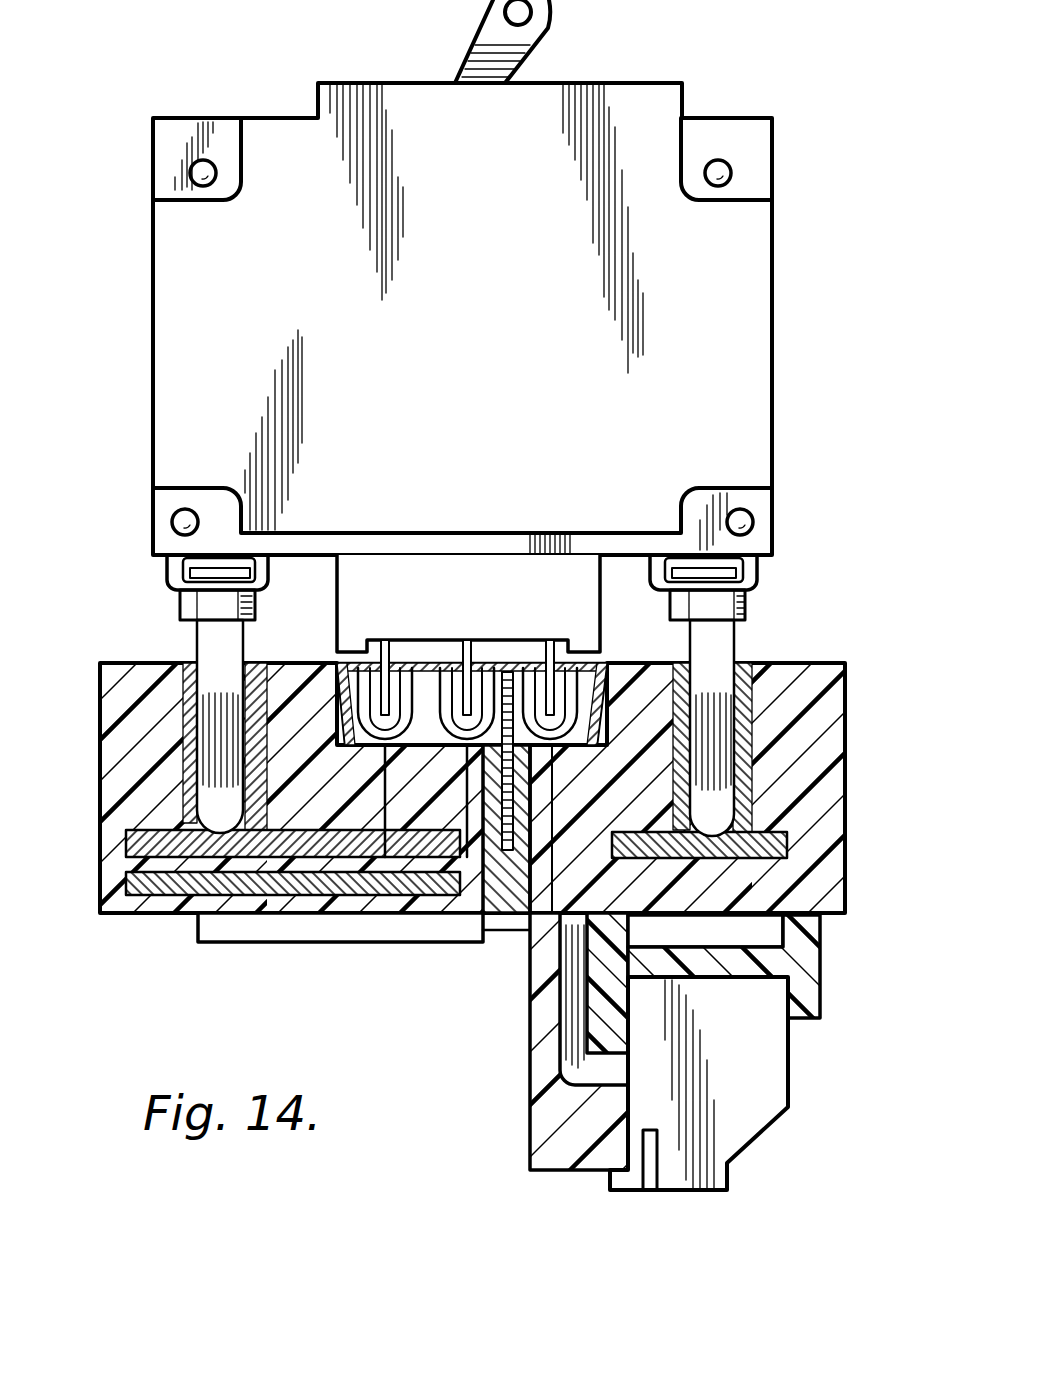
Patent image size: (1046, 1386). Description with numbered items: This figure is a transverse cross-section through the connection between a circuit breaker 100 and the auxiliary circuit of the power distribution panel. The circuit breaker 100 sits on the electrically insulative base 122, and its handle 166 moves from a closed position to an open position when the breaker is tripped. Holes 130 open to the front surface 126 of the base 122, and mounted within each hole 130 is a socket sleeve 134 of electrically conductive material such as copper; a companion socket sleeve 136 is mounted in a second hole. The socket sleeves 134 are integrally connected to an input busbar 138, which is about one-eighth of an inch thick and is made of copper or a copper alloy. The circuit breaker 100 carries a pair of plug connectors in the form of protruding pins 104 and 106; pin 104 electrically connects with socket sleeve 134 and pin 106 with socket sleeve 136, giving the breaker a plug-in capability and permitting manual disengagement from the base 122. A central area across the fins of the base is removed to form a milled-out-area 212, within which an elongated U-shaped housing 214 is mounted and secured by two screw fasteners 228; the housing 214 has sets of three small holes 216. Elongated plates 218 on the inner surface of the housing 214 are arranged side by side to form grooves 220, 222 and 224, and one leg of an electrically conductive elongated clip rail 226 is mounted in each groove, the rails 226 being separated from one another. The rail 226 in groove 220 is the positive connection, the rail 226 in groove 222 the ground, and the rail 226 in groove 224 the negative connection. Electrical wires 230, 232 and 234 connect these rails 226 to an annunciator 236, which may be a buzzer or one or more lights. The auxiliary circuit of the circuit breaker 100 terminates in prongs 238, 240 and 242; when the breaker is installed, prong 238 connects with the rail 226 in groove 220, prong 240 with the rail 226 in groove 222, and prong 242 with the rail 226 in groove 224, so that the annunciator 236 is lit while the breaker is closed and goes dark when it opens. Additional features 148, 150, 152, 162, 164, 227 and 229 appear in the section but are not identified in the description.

The circuit breaker 100 is at (750, 380).
The protruding pin 104 is at (160, 770).
The protruding pin 106 is at (800, 762).
The electrically insulative base 122 is at (830, 850).
The front surface 126 is at (145, 662).
The hole 130 is at (197, 800).
The socket sleeve 134 is at (183, 722).
The socket sleeve 136 is at (735, 800).
The input busbar 138 is at (126, 842).
The connector housing 148 is at (745, 1128).
The conductor 150 is at (560, 1072).
The base bottom 152 is at (150, 913).
The mounting block 162 is at (815, 962).
The bracket 164 is at (560, 1122).
The handle 166 is at (552, 32).
The milled-out-area 212 is at (705, 690).
The U-shaped housing 214 is at (340, 680).
The small holes 216 is at (400, 690).
The elongated plates 218 is at (422, 915).
The groove 220 is at (458, 662).
The groove 222 is at (546, 662).
The groove 224 is at (605, 700).
The elongated clip rail 226 is at (790, 725).
The layer 227 is at (790, 890).
The screw fasteners 228 is at (800, 872).
The layer 229 is at (830, 913).
The electrical wire 230 is at (363, 917).
The electrical wire 232 is at (466, 915).
The electrical wire 234 is at (506, 915).
The annunciator 236 is at (237, 935).
The prong 238 is at (370, 660).
The prong 240 is at (472, 690).
The prong 242 is at (562, 690).